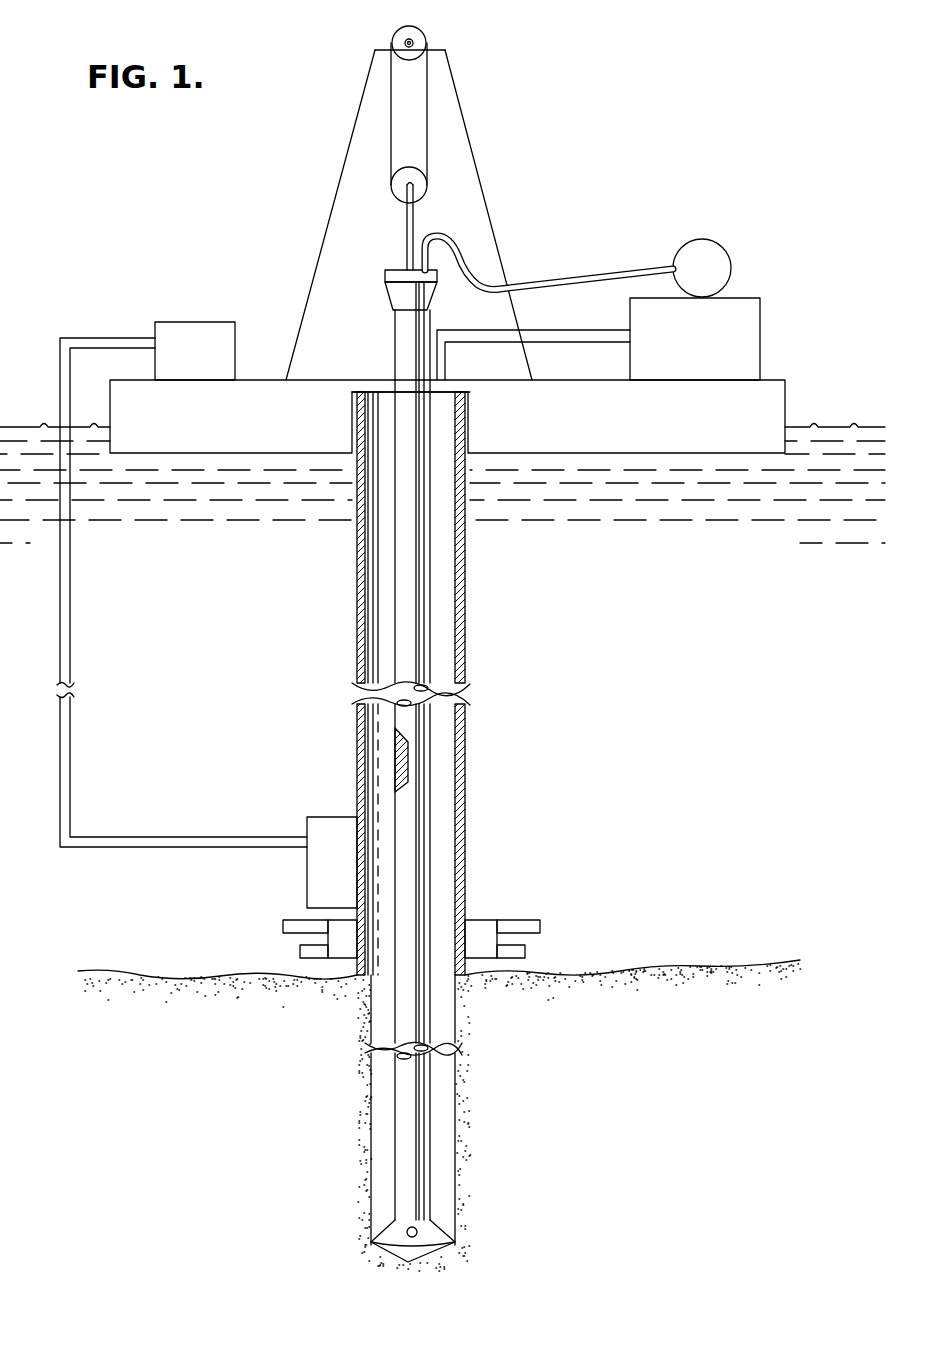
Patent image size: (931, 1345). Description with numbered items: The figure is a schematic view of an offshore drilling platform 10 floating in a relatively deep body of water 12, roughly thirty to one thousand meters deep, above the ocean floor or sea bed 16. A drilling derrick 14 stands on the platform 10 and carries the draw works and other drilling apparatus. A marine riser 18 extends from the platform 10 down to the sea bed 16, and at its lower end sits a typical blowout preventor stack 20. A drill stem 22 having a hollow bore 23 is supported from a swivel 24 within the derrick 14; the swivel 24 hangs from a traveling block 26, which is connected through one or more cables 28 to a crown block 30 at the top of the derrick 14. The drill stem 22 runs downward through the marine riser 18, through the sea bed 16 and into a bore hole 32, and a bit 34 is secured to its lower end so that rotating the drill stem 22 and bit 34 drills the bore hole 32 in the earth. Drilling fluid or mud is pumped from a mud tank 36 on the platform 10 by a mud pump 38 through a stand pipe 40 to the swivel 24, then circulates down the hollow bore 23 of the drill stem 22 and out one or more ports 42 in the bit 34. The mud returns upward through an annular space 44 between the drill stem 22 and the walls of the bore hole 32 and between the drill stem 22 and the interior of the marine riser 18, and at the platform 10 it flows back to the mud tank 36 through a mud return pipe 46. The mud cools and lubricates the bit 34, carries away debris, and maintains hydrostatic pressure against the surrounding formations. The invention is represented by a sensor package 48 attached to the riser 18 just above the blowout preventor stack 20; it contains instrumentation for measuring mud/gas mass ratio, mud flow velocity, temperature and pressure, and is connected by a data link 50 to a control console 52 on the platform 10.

The offshore drilling platform 10 is at (579, 154).
The body of water 12 is at (668, 592).
The drilling derrick 14 is at (468, 128).
The sea bed 16 is at (650, 960).
The marine riser 18 is at (466, 592).
The blowout preventor stack 20 is at (478, 920).
The drill stem 22 is at (430, 636).
The hollow bore 23 is at (405, 780).
The swivel 24 is at (388, 272).
The traveling block 26 is at (395, 185).
The cables 28 is at (390, 120).
The crown block 30 is at (424, 38).
The bore hole 32 is at (452, 1098).
The bit 34 is at (440, 1245).
The mud tank 36 is at (763, 326).
The mud pump 38 is at (726, 252).
The stand pipe 40 is at (540, 270).
The ports 42 is at (418, 1230).
The annular space 44 is at (445, 748).
The mud return pipe 46 is at (548, 330).
The sensor package 48 is at (318, 817).
The data link 50 is at (70, 778).
The control console 52 is at (200, 322).